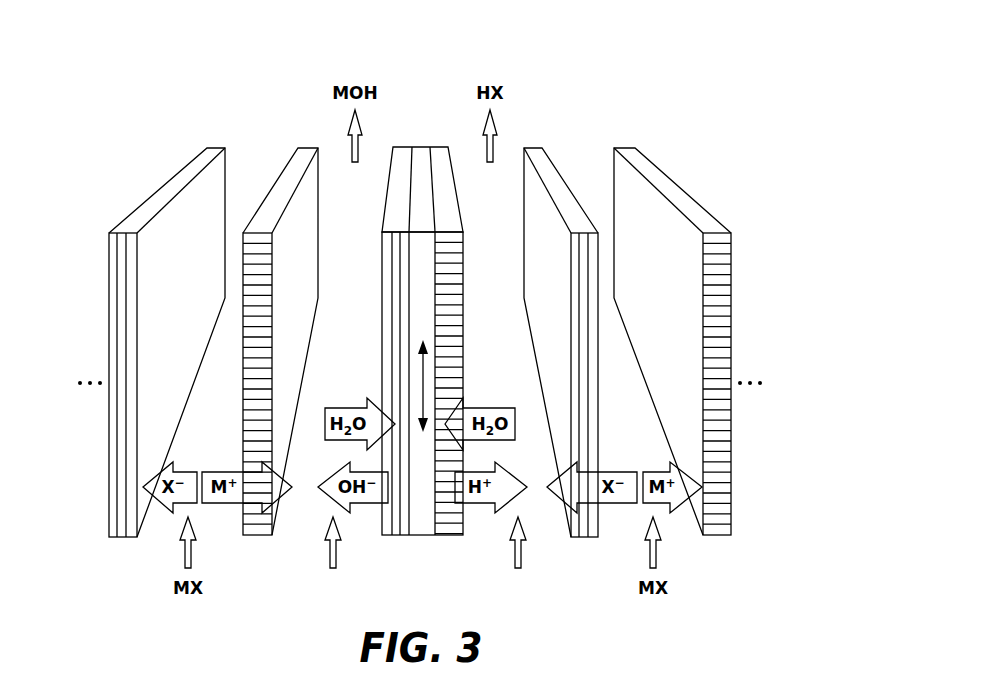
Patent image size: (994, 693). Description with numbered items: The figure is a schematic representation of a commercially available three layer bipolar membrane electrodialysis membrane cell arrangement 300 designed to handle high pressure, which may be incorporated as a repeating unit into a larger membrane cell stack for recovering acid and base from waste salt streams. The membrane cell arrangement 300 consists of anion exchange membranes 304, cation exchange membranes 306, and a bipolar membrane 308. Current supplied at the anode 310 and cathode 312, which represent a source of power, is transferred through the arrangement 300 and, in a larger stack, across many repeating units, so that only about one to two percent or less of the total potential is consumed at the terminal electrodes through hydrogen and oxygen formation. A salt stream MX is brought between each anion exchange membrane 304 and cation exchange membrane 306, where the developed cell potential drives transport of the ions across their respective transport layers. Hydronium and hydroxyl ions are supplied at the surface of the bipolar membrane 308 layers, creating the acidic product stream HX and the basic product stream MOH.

The membrane cell arrangement 300 is at (174, 31).
The anion exchange membrane 304 is at (220, 178).
The cation exchange membrane 306 is at (307, 148).
The bipolar membrane 308 is at (388, 140).
The anode 310 is at (40, 381).
The cathode 312 is at (800, 381).